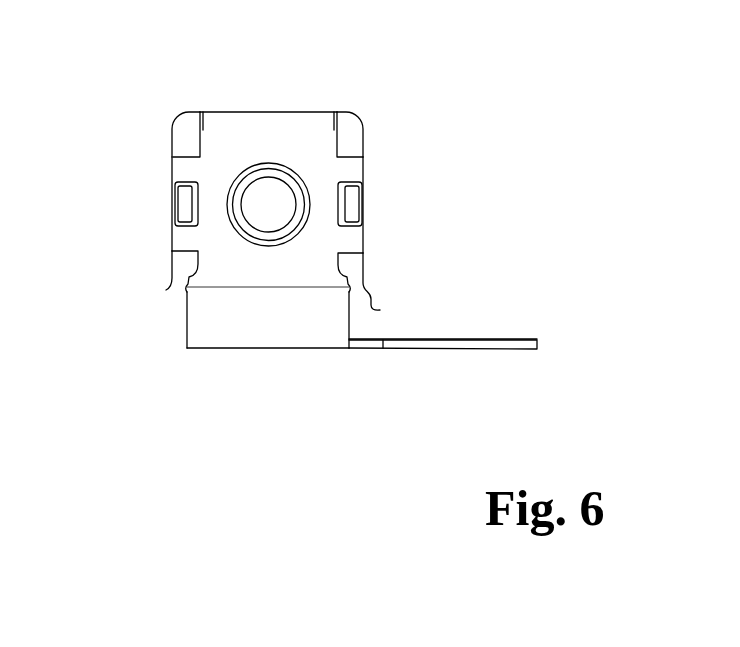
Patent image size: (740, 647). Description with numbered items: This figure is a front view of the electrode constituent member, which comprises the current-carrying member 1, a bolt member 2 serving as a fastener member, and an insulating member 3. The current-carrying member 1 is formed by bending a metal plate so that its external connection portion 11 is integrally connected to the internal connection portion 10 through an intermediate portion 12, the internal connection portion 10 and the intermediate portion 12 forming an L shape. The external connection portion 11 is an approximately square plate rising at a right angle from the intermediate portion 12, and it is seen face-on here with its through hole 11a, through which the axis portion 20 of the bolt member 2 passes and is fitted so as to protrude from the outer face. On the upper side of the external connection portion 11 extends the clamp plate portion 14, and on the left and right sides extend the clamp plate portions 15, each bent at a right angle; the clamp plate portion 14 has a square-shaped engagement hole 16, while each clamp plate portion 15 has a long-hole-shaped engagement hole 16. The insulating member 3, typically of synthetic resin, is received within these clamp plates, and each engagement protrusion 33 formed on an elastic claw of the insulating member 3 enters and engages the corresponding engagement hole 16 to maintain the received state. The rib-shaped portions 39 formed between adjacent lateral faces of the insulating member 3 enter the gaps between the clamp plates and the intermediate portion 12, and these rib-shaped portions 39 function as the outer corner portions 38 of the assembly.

The current-carrying member 1 is at (450, 349).
The bolt member 2 is at (214, 298).
The axis portion 20 is at (256, 215).
The insulating member 3 is at (363, 142).
The internal connection portion 10 is at (507, 340).
The external connection portion 11 is at (245, 140).
The through hole 11a is at (278, 247).
The intermediate portion 12 is at (227, 348).
The clamp plate portion 14 is at (287, 112).
The clamp plate portion 15 is at (172, 173).
The engagement hole 16 is at (174, 222).
The engagement protrusion 33 is at (176, 198).
The outer corner portion 38 is at (269, 182).
The rib-shaped portion 39 is at (175, 110).